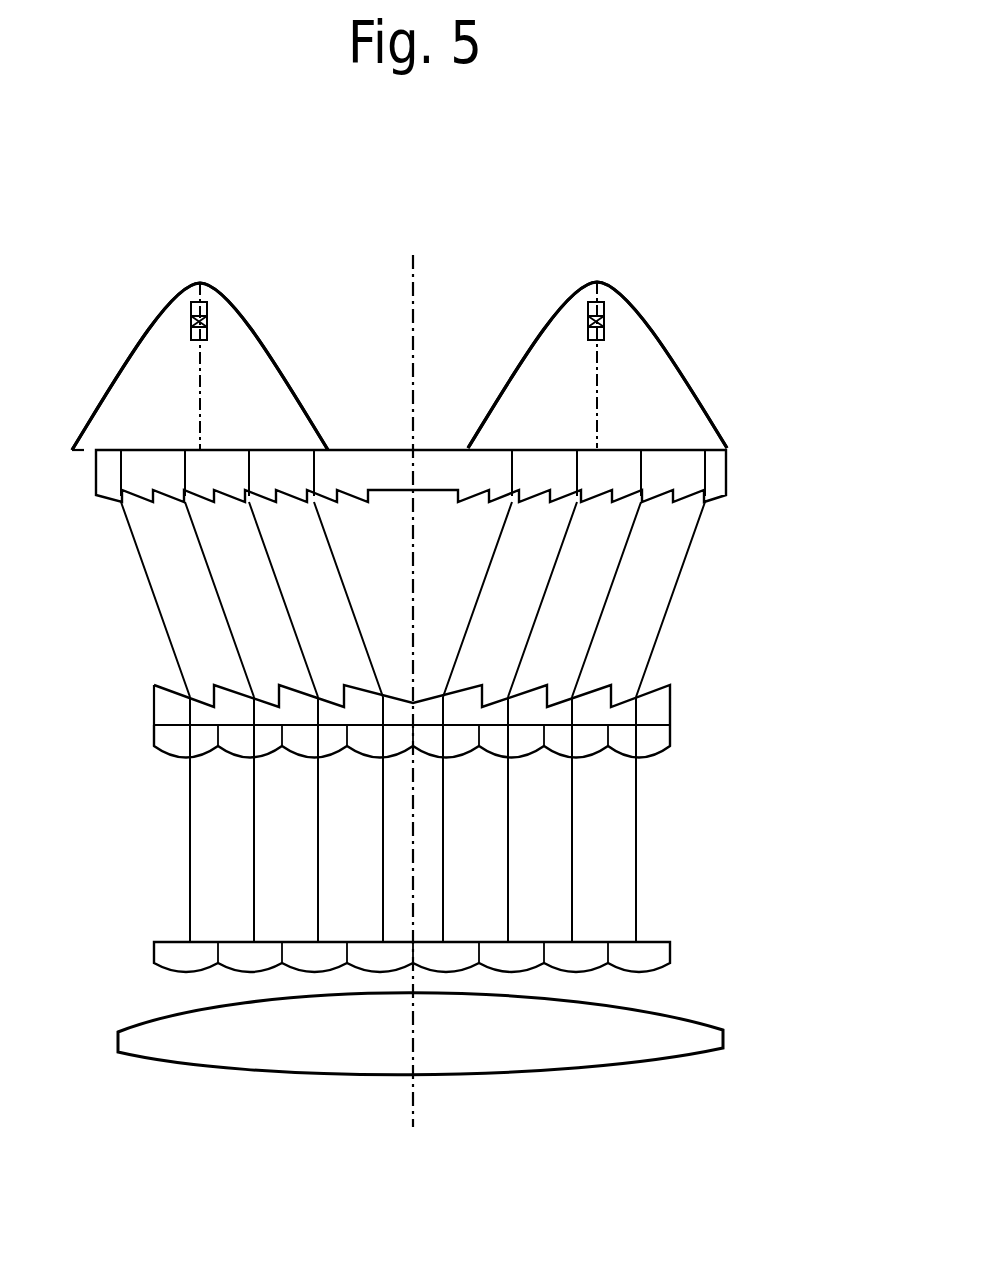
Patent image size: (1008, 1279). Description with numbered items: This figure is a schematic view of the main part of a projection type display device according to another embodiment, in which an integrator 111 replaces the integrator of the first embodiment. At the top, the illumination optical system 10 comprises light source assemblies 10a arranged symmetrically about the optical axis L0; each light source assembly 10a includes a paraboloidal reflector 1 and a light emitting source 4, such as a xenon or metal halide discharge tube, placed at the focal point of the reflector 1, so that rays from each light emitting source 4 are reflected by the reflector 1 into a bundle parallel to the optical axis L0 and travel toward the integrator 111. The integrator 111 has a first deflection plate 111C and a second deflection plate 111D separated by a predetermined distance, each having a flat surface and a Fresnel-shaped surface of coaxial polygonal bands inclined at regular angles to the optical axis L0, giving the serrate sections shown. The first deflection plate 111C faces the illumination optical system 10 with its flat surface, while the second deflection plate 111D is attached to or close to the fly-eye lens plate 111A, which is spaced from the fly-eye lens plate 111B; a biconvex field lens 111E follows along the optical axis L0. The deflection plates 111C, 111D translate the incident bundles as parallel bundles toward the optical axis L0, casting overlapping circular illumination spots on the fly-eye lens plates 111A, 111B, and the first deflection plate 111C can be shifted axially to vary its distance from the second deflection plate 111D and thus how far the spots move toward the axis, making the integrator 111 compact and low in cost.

The paraboloidal reflector 1 is at (88, 410).
The light emitting source 4 is at (208, 318).
The illumination optical system 10 is at (402, 327).
The light source assembly 10a is at (133, 328).
The integrator 111 is at (510, 762).
The second fly-eye lens plate 111A is at (670, 735).
The first fly-eye lens plate 111B is at (668, 952).
The first deflection plate 111C is at (727, 474).
The second deflection plate 111D is at (670, 705).
The biconvex field lens 111E is at (723, 1040).
The optical axis L0 is at (413, 1115).